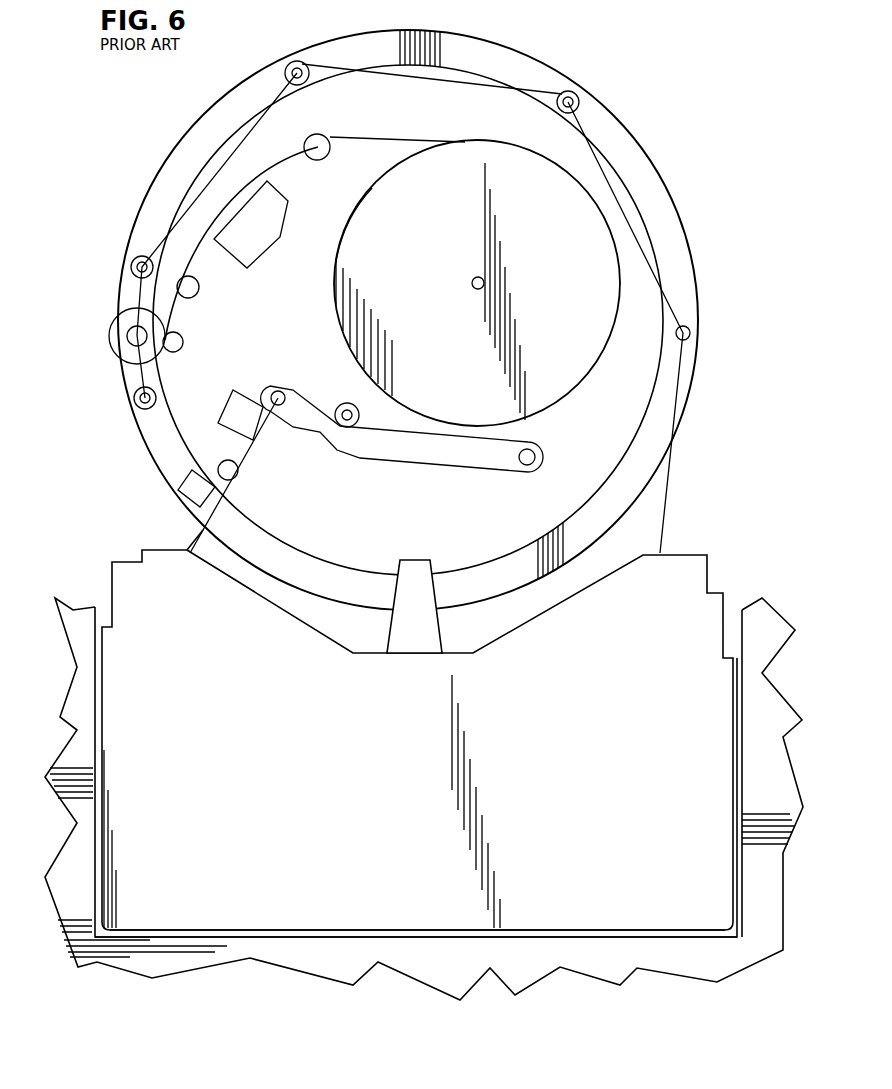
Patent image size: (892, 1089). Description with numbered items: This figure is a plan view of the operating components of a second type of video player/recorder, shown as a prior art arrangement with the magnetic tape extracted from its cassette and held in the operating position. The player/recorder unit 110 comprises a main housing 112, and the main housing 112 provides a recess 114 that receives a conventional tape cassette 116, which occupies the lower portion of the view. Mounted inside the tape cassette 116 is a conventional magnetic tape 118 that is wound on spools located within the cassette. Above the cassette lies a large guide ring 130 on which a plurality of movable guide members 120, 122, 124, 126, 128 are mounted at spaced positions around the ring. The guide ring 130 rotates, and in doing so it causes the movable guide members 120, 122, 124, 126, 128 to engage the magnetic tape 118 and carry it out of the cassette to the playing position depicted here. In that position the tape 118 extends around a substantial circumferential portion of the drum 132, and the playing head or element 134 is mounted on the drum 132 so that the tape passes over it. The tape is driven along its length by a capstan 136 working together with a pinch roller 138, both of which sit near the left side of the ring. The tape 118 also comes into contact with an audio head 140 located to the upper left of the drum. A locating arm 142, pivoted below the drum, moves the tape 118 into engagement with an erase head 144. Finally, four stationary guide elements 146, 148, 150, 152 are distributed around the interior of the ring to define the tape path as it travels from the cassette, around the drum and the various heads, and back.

The player/recorder unit 110 is at (134, 462).
The main housing 112 is at (384, 988).
The recess 114 is at (354, 928).
The tape cassette 116 is at (286, 950).
The magnetic tape 118 is at (212, 517).
The movable guide member 120 is at (134, 398).
The movable guide member 122 is at (128, 272).
The movable guide member 124 is at (294, 62).
The movable guide member 126 is at (578, 98).
The movable guide member 128 is at (690, 334).
The guide ring 130 is at (686, 283).
The drum 132 is at (343, 268).
The playing head 134 is at (372, 190).
The capstan 136 is at (183, 345).
The pinch roller 138 is at (110, 337).
The audio head 140 is at (273, 228).
The locating arm 142 is at (458, 460).
The erase head 144 is at (235, 390).
The stationary guide element 146 is at (230, 460).
The stationary guide element 148 is at (200, 287).
The stationary guide element 150 is at (329, 152).
The stationary guide element 152 is at (347, 402).